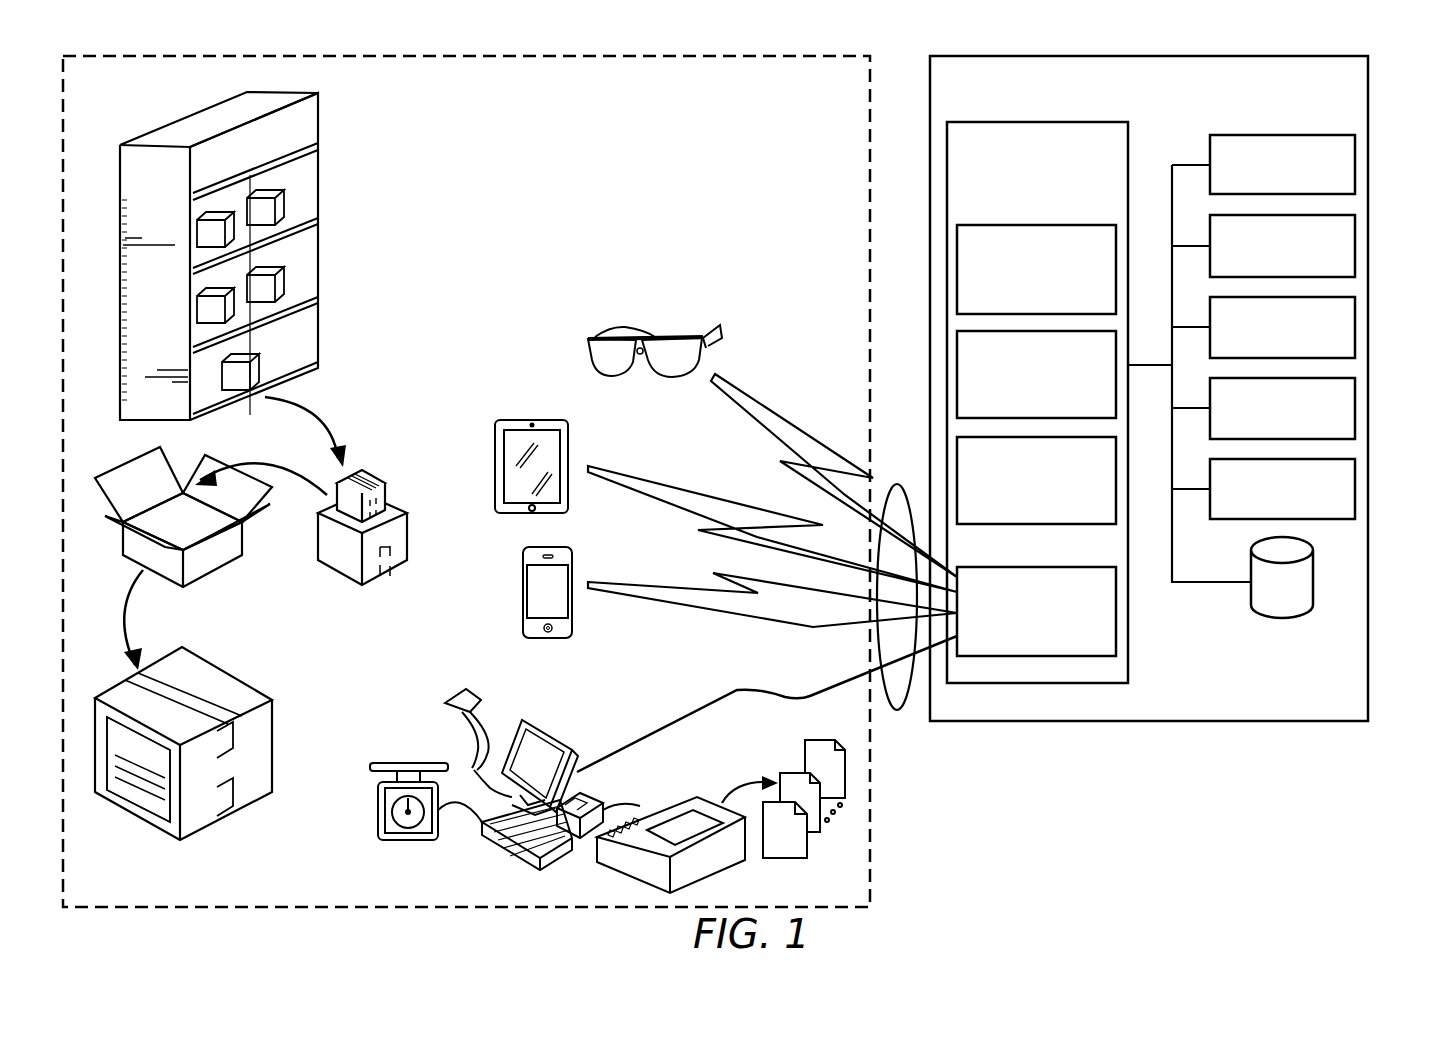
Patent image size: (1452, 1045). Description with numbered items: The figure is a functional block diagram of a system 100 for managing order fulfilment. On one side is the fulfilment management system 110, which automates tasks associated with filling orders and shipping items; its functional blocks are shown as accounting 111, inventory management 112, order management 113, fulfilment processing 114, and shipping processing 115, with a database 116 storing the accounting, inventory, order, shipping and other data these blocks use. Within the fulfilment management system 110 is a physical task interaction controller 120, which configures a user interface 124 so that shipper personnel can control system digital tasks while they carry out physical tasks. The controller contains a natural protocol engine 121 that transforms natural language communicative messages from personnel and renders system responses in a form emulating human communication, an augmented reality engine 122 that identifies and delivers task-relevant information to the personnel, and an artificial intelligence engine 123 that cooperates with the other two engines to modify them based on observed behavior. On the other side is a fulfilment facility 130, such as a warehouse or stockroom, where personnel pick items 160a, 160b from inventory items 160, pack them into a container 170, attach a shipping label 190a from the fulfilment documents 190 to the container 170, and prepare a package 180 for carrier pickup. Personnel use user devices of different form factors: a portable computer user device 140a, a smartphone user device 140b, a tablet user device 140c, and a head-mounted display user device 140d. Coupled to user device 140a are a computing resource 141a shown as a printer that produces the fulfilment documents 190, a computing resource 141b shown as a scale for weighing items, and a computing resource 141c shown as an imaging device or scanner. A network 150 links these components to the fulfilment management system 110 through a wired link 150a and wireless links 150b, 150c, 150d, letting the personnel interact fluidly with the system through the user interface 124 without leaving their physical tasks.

The system 100 is at (1266, 822).
The fulfilment management system 110 is at (1335, 56).
The accounting 111 is at (1355, 165).
The inventory management 112 is at (1355, 246).
The order management 113 is at (1355, 327).
The fulfilment processing 114 is at (1355, 408).
The shipping processing 115 is at (1355, 489).
The database 116 is at (1280, 618).
The physical task interaction controller 120 is at (1128, 140).
The natural protocol engine 121 is at (957, 258).
The augmented reality engine 122 is at (957, 366).
The artificial intelligence engine 123 is at (1050, 524).
The user interface 124 is at (1116, 607).
The fulfilment facility 130 is at (705, 56).
The user device 140a is at (495, 855).
The user device 140b is at (522, 598).
The user device 140c is at (542, 418).
The user device 140d is at (612, 332).
The computing resource 141a is at (673, 795).
The computing resource 141b is at (390, 763).
The computing resource 141c is at (493, 700).
The network 150 is at (897, 484).
The link 150a is at (745, 690).
The wireless link 150b is at (628, 586).
The wireless link 150c is at (680, 482).
The wireless link 150d is at (785, 410).
The items 160 is at (320, 172).
The item 160a is at (410, 540).
The item 160b is at (395, 468).
The container 170 is at (215, 573).
The package 180 is at (262, 672).
The fulfilment documents 190 is at (790, 862).
The shipping label 190a is at (160, 807).